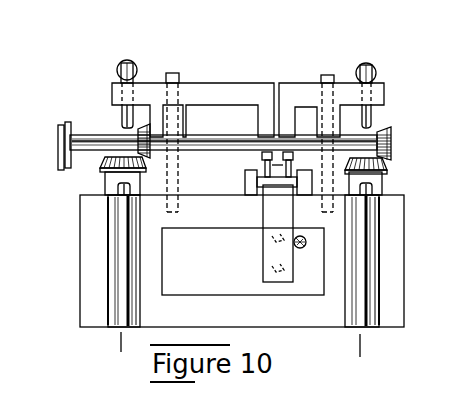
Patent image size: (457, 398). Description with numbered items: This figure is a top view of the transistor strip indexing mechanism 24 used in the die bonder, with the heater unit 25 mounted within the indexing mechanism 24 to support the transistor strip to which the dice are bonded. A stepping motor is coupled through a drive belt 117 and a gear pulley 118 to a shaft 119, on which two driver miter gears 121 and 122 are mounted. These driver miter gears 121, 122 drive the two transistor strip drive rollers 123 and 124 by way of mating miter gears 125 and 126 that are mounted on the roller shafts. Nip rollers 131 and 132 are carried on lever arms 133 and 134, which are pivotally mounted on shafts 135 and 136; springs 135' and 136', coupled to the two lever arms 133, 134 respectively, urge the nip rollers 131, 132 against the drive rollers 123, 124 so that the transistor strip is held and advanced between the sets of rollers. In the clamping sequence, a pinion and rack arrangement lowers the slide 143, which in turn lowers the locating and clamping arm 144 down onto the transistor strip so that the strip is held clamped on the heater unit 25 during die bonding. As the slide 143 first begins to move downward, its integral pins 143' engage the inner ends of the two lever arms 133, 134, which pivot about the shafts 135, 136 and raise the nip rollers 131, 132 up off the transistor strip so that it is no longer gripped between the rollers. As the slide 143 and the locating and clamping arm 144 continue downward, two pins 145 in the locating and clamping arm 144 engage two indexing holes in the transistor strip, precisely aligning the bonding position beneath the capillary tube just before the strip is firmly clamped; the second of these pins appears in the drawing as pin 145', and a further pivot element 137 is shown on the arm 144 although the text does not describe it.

The transistor strip indexing mechanism 24 is at (80, 243).
The heater unit 25 is at (212, 296).
The drive belt 117 is at (58, 164).
The gear pulley 118 is at (76, 110).
The shaft 119 is at (103, 156).
The driver miter gear 121 is at (146, 125).
The driver miter gear 122 is at (384, 128).
The transistor strip drive roller 123 is at (105, 211).
The transistor strip drive roller 124 is at (382, 226).
The miter gear 125 is at (105, 178).
The miter gear 126 is at (384, 180).
The nip roller 131 is at (115, 290).
The nip roller 132 is at (372, 308).
The lever arm 133 is at (112, 93).
The lever arm 134 is at (344, 86).
The shaft 135 is at (195, 133).
The spring 135' is at (117, 81).
The shaft 136 is at (310, 132).
The spring 136' is at (389, 90).
The pivot pin 137 is at (300, 248).
The slide 143 is at (258, 182).
The integral pins 143' is at (249, 164).
The locating and clamping arm 144 is at (263, 262).
The pin 145 is at (256, 245).
The stop 145' is at (256, 277).